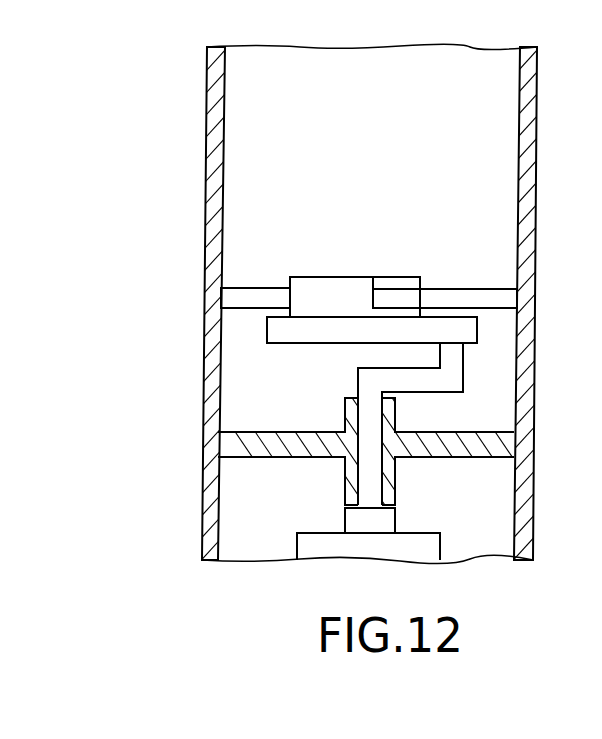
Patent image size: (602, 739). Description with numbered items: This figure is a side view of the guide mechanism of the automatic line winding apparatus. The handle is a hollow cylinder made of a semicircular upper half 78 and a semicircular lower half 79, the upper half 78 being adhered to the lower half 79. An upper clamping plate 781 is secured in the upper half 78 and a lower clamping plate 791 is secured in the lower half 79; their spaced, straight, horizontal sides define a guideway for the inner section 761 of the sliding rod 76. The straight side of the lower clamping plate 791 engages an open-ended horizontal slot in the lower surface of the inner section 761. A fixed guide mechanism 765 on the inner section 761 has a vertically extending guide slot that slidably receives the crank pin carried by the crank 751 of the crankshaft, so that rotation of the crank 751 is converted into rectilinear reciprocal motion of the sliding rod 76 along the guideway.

The upper half 78 is at (216, 247).
The lower half 79 is at (523, 248).
The upper clamping plate 781 is at (248, 297).
The lower clamping plate 791 is at (488, 298).
The sliding rod 76 is at (325, 295).
The inner section 761 is at (392, 287).
The guide mechanism 765 is at (313, 330).
The crank 751 is at (380, 382).